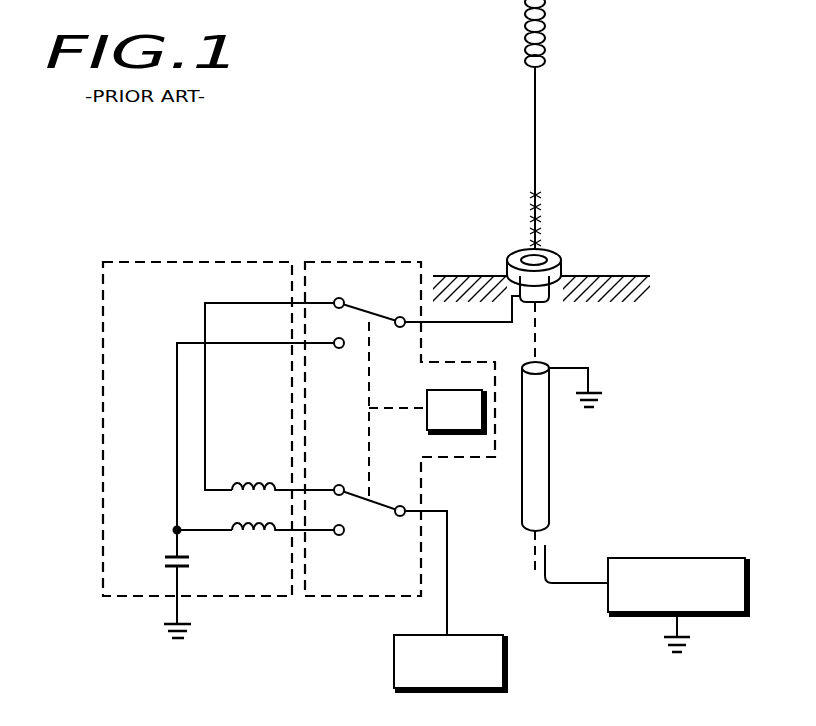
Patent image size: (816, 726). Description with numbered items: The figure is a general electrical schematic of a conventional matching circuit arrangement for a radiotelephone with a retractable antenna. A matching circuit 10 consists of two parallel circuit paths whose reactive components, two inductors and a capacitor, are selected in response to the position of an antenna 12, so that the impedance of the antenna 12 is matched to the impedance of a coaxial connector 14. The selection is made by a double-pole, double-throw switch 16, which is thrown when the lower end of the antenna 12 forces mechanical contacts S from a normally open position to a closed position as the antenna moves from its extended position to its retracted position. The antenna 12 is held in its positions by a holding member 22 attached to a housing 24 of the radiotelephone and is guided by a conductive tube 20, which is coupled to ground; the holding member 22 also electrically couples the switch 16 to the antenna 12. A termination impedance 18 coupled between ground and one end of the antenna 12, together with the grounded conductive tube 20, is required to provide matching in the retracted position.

The matching circuit 10 is at (196, 259).
The antenna 12 is at (536, 152).
The coaxial connector 14 is at (394, 657).
The double-pole, double-throw switch 16 is at (346, 259).
The termination impedance 18 is at (676, 558).
The conductive tube 20 is at (536, 448).
The holding member 22 is at (562, 258).
The housing 24 is at (620, 275).